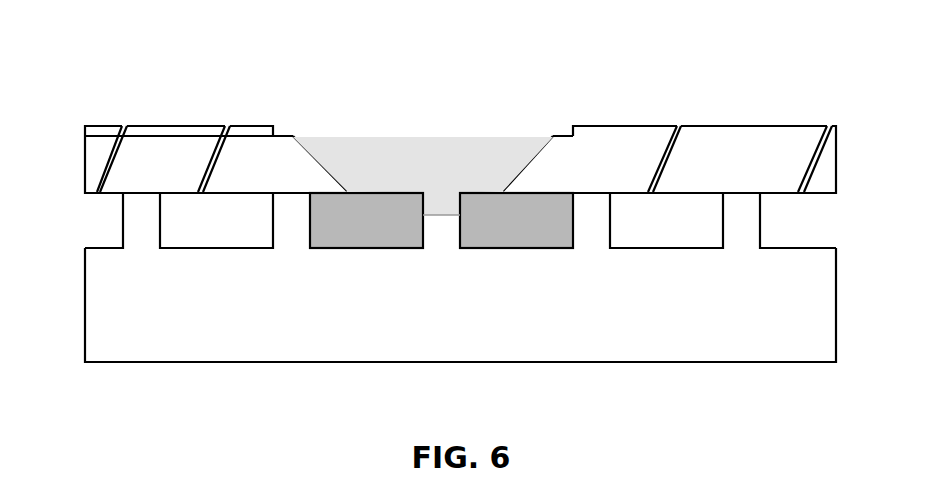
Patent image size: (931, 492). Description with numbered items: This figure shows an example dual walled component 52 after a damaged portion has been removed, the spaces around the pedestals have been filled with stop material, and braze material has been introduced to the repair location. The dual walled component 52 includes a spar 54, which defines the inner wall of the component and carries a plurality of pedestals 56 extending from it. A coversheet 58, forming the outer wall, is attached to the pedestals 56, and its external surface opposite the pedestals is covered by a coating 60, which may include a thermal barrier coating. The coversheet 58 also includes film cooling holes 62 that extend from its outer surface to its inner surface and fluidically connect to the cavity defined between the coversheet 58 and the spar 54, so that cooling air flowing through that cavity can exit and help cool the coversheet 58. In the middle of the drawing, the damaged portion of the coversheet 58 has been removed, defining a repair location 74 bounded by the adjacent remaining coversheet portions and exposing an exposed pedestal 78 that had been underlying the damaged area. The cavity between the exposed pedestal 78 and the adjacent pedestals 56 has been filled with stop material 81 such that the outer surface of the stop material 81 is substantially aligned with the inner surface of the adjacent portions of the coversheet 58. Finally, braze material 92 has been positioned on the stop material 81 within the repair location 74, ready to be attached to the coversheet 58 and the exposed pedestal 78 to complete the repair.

The dual walled component 52 is at (83, 70).
The spar 54 is at (95, 305).
The pedestals 56 is at (283, 220).
The coversheet 58 is at (95, 163).
The coating 60 is at (95, 132).
The film cooling holes 62 is at (217, 147).
The repair location 74 is at (447, 112).
The exposed pedestal 78 is at (440, 232).
The stop material 81 is at (397, 200).
The braze material 92 is at (367, 155).